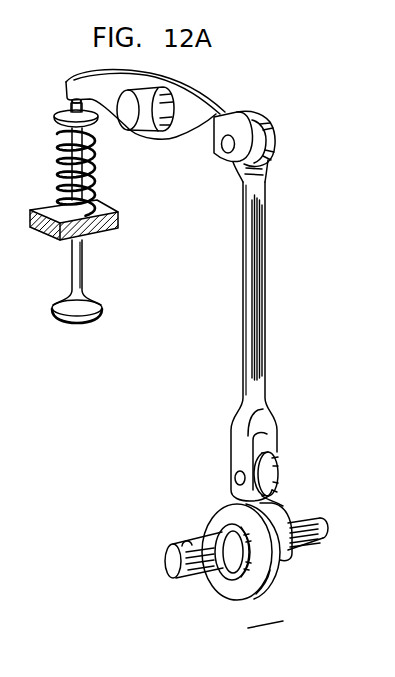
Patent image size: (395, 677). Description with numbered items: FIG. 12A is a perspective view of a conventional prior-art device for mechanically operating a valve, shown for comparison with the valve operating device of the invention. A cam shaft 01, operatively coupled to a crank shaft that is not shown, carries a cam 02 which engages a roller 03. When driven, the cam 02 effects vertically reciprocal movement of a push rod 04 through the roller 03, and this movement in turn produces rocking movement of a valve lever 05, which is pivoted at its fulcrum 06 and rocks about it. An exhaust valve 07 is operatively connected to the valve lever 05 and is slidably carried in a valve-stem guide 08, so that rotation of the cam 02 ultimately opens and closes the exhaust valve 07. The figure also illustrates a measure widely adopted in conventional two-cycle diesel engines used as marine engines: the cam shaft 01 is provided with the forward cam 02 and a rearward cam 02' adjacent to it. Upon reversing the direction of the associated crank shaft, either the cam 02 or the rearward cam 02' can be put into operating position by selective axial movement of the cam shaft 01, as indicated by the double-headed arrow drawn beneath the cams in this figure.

The cam shaft 01 is at (313, 550).
The cam 02 is at (261, 548).
The rearward cam 02' is at (270, 599).
The roller 03 is at (281, 477).
The push rod 04 is at (268, 298).
The valve lever 05 is at (216, 107).
The fulcrum 06 is at (128, 125).
The exhaust valve 07 is at (101, 317).
The valve-stem guide 08 is at (66, 168).